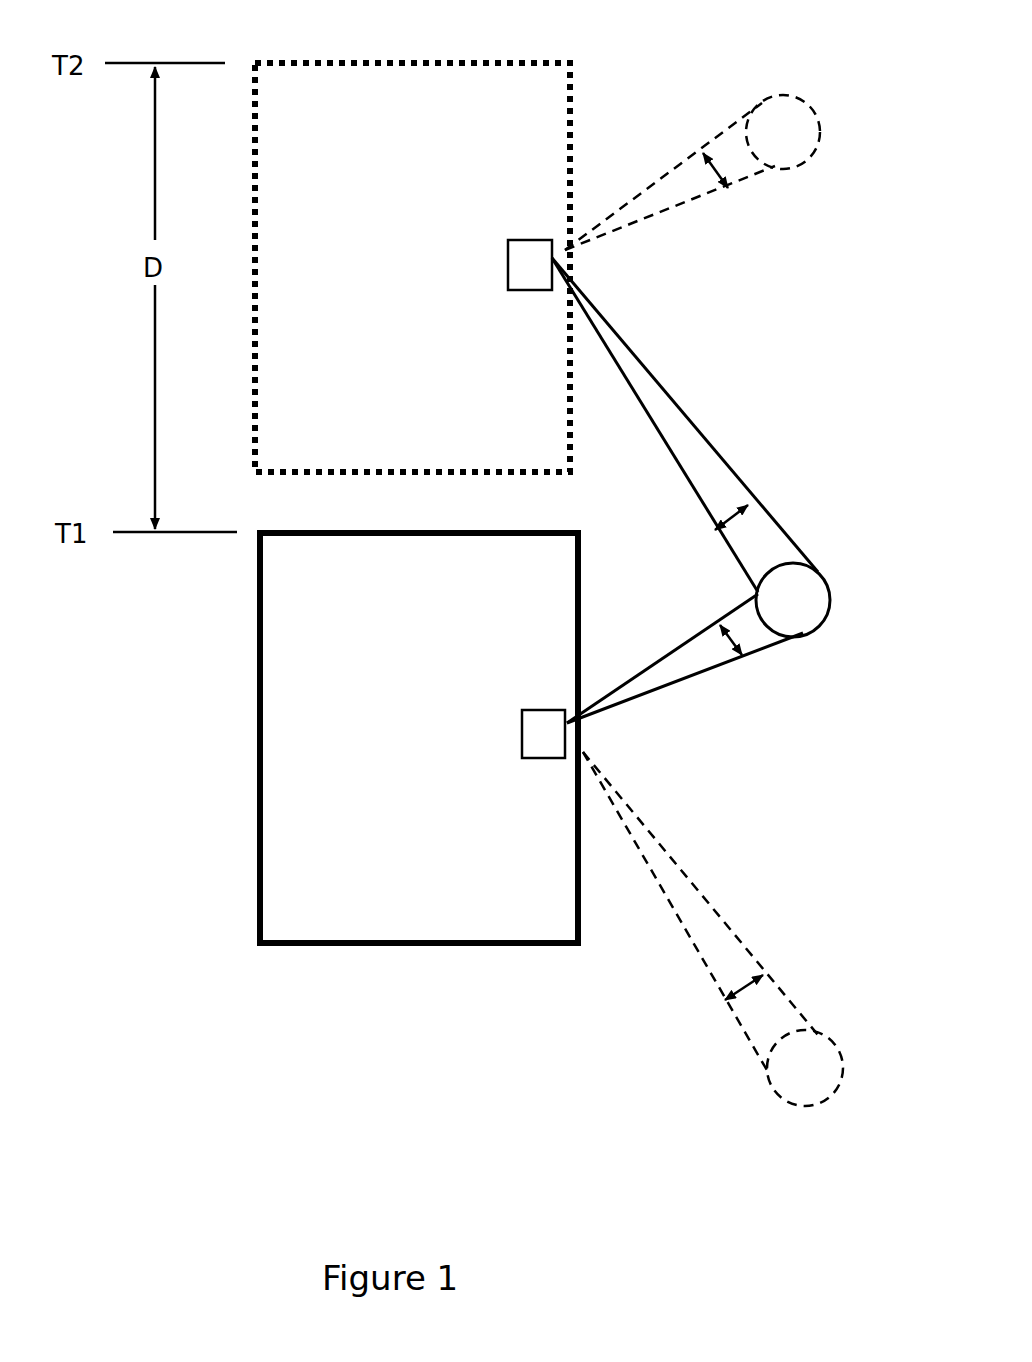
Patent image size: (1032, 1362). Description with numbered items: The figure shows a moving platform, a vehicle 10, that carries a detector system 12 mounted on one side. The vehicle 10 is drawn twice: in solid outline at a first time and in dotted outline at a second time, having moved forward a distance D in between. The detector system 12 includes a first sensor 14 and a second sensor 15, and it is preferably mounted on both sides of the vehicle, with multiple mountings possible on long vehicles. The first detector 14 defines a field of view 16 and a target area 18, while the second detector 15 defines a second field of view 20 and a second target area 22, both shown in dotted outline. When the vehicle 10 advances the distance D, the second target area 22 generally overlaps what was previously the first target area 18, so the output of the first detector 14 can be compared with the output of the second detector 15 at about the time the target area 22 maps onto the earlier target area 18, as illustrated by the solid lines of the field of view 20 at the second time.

The vehicle 10 is at (374, 60).
The detector system 12 is at (506, 263).
The first sensor 14 is at (537, 248).
The second sensor 15 is at (543, 279).
The field of view 16 is at (708, 184).
The target area 18 is at (801, 117).
The second field of view 20 is at (745, 518).
The second target area 22 is at (821, 1053).